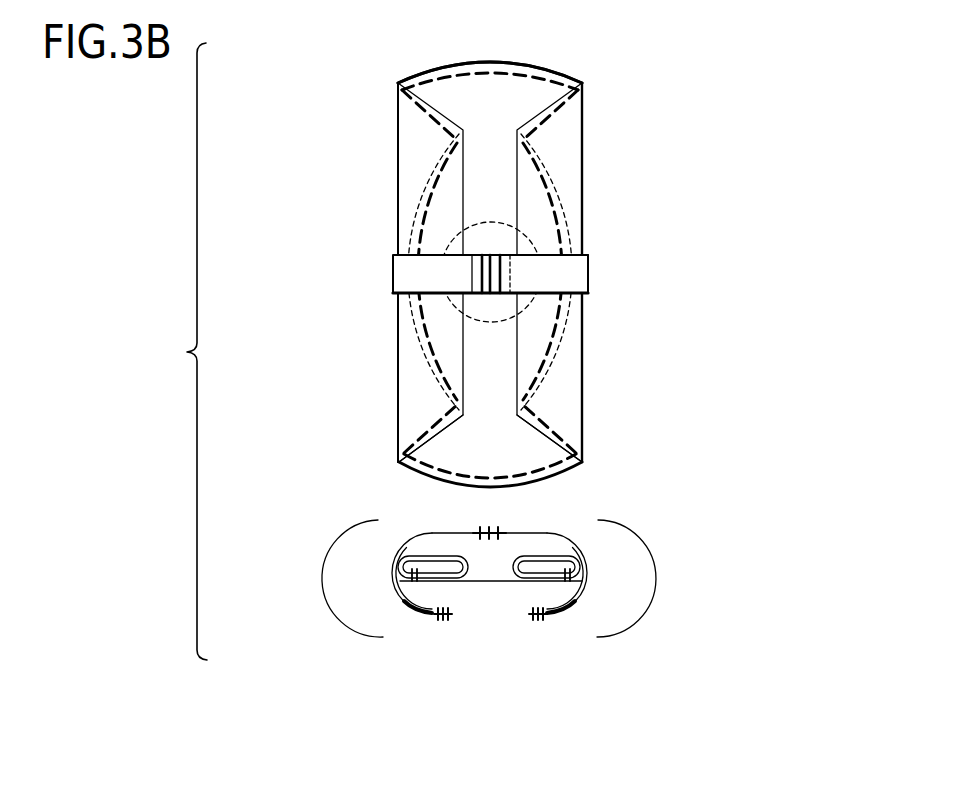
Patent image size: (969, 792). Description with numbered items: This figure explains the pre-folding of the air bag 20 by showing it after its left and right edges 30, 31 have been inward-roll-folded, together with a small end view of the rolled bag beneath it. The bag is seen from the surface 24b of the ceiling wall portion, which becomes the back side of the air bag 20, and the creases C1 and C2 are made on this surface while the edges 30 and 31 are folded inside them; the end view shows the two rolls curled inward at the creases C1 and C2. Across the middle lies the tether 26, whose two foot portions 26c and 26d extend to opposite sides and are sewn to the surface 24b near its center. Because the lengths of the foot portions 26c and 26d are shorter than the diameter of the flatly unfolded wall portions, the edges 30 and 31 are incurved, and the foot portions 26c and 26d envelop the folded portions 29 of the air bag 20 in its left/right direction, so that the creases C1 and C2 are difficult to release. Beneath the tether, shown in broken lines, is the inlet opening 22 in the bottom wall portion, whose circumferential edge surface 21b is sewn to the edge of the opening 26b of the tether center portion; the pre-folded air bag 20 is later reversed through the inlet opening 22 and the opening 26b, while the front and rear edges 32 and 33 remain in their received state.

The air bag 20 is at (596, 106).
The surface of the bottom wall portion 21b is at (407, 131).
The inlet opening 22 is at (503, 307).
The surface of the ceiling wall portion 24b is at (452, 93).
The tether 26 is at (437, 274).
The foot portion 26c is at (393, 272).
The opening 26b is at (537, 607).
The foot portion 26d is at (588, 271).
The folded portion 29 is at (523, 444).
The left edge 30 is at (408, 230).
The right edge 31 is at (574, 225).
The front edge 32 is at (528, 64).
The rear edge 33 is at (568, 477).
The crease C1 is at (470, 580).
The crease C2 is at (398, 177).